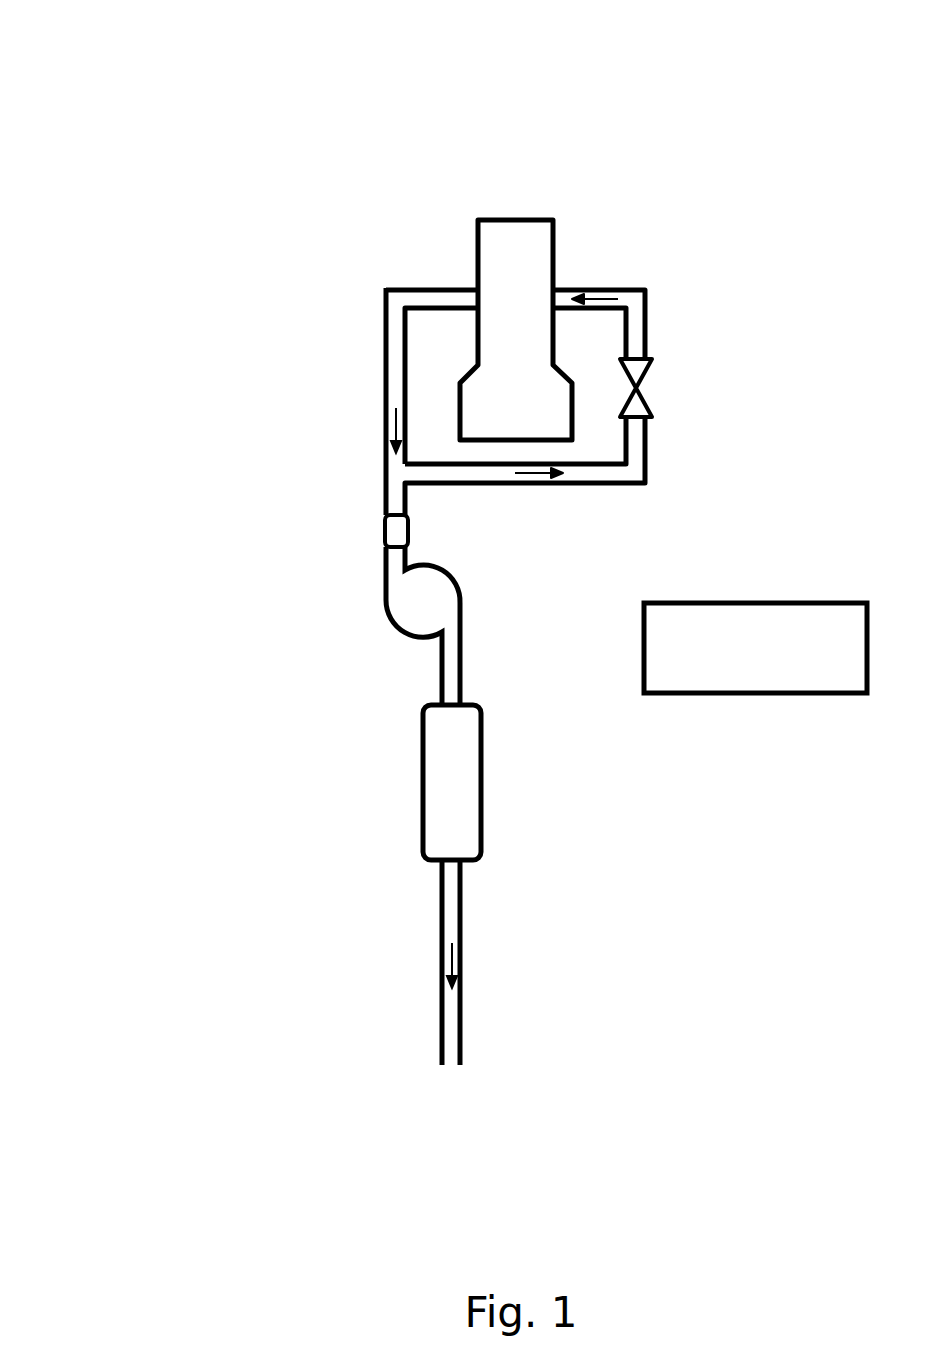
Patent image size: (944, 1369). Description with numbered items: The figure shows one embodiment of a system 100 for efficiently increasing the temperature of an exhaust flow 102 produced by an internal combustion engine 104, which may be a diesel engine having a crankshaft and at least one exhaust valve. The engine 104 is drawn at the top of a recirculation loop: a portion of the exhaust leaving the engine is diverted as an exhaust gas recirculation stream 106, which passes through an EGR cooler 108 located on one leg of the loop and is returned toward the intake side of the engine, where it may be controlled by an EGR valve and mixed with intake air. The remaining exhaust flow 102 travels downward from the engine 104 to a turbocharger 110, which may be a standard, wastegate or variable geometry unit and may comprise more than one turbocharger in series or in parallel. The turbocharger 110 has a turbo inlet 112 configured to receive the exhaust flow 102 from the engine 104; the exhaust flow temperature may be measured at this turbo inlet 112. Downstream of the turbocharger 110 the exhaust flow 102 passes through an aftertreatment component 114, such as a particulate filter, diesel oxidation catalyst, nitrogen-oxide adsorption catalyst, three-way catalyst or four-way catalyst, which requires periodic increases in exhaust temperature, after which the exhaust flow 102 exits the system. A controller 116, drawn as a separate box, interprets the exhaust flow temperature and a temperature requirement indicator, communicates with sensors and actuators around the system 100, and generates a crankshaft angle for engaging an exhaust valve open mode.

The system 100 is at (100, 53).
The exhaust flow 102 is at (387, 427).
The internal combustion engine 104 is at (513, 219).
The exhaust gas recirculation (EGR) stream 106 is at (567, 483).
The EGR cooler 108 is at (648, 364).
The turbocharger 110 is at (386, 601).
The turbo inlet 112 is at (386, 519).
The aftertreatment component 114 is at (423, 790).
The controller 116 is at (755, 648).